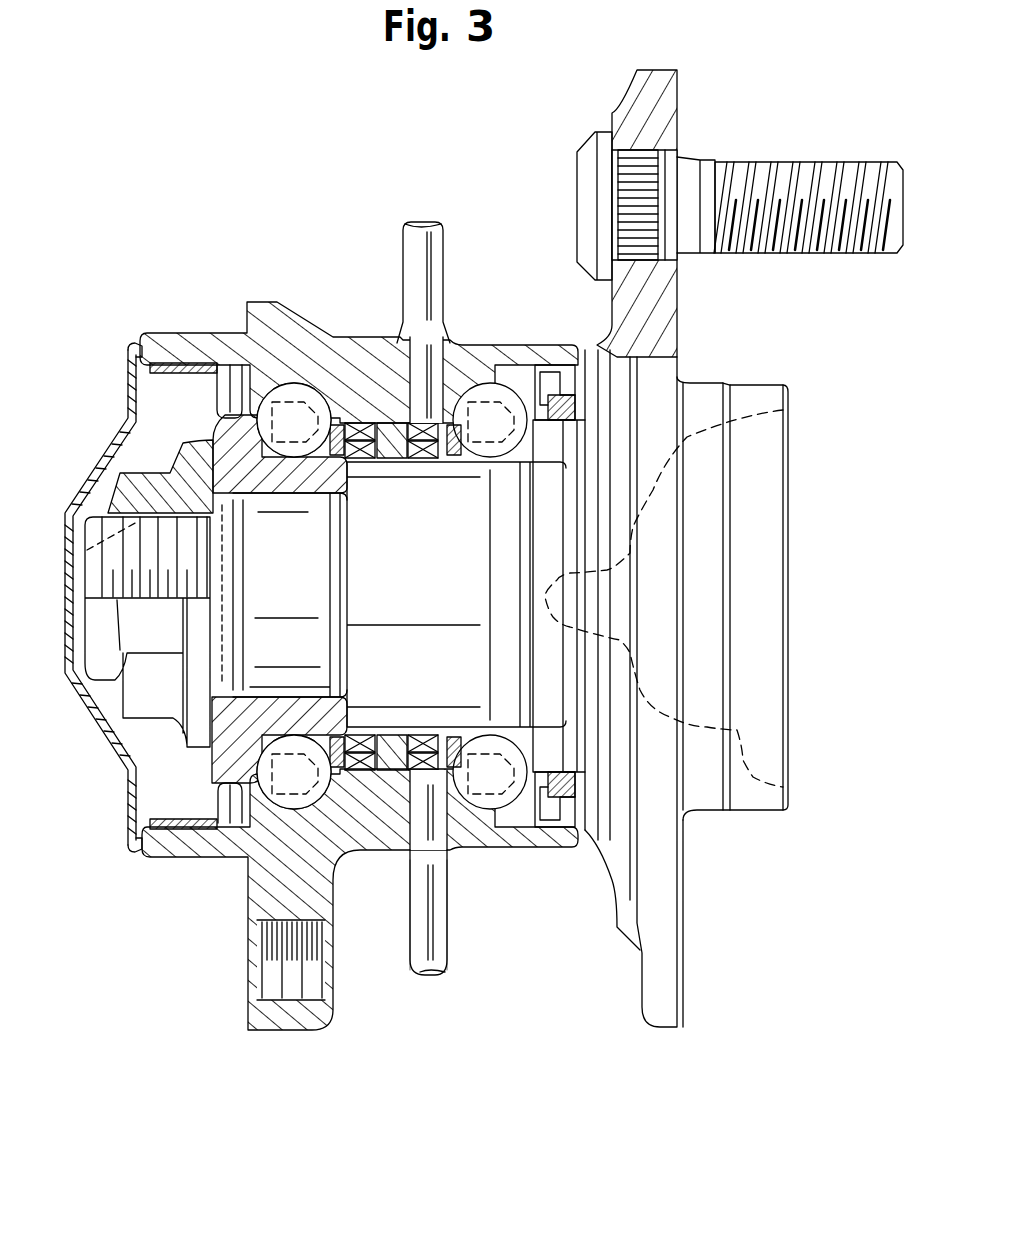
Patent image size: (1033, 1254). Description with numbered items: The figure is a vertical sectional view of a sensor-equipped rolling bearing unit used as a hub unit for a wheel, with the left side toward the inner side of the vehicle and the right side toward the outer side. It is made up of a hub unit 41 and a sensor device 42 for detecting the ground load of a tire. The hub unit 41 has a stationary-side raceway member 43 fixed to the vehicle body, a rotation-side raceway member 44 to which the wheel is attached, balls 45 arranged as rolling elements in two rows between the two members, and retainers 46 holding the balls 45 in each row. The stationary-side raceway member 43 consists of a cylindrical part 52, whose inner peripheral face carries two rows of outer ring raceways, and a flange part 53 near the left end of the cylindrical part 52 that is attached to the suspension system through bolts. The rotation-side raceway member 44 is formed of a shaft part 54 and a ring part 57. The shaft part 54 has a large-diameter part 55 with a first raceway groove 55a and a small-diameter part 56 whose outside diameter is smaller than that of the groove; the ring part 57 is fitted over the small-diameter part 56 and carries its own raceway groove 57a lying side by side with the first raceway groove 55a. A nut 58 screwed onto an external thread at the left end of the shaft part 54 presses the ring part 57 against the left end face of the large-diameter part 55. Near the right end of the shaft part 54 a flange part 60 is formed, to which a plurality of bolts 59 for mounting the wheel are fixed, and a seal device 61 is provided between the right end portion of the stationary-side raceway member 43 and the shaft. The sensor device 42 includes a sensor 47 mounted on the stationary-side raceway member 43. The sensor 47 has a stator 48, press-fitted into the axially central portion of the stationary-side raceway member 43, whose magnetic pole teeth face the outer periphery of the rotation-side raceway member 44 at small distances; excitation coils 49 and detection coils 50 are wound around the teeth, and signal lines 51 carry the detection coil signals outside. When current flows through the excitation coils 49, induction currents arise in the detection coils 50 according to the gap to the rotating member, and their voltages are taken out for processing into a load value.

The hub unit 41 is at (217, 263).
The sensor device 42 is at (356, 418).
The stationary-side raceway member 43 is at (270, 332).
The rotation-side raceway member 44 is at (471, 437).
The balls 45 is at (287, 798).
The retainers 46 is at (343, 780).
The sensor 47 is at (386, 420).
The stator 48 is at (402, 460).
The excitation coils 49 is at (417, 737).
The detection coils 50 is at (451, 830).
The signal lines 51 is at (427, 247).
The cylindrical part 52 is at (457, 846).
The flange part 53 is at (285, 1016).
The shaft part 54 is at (477, 567).
The large-diameter part 55 is at (472, 669).
The first raceway groove 55a is at (520, 467).
The small-diameter part 56 is at (268, 642).
The ring part 57 is at (223, 438).
The raceway groove 57a is at (213, 407).
The nut 58 is at (135, 673).
The bolts 59 is at (770, 185).
The flange part 60 is at (655, 110).
The seal device 61 is at (560, 362).